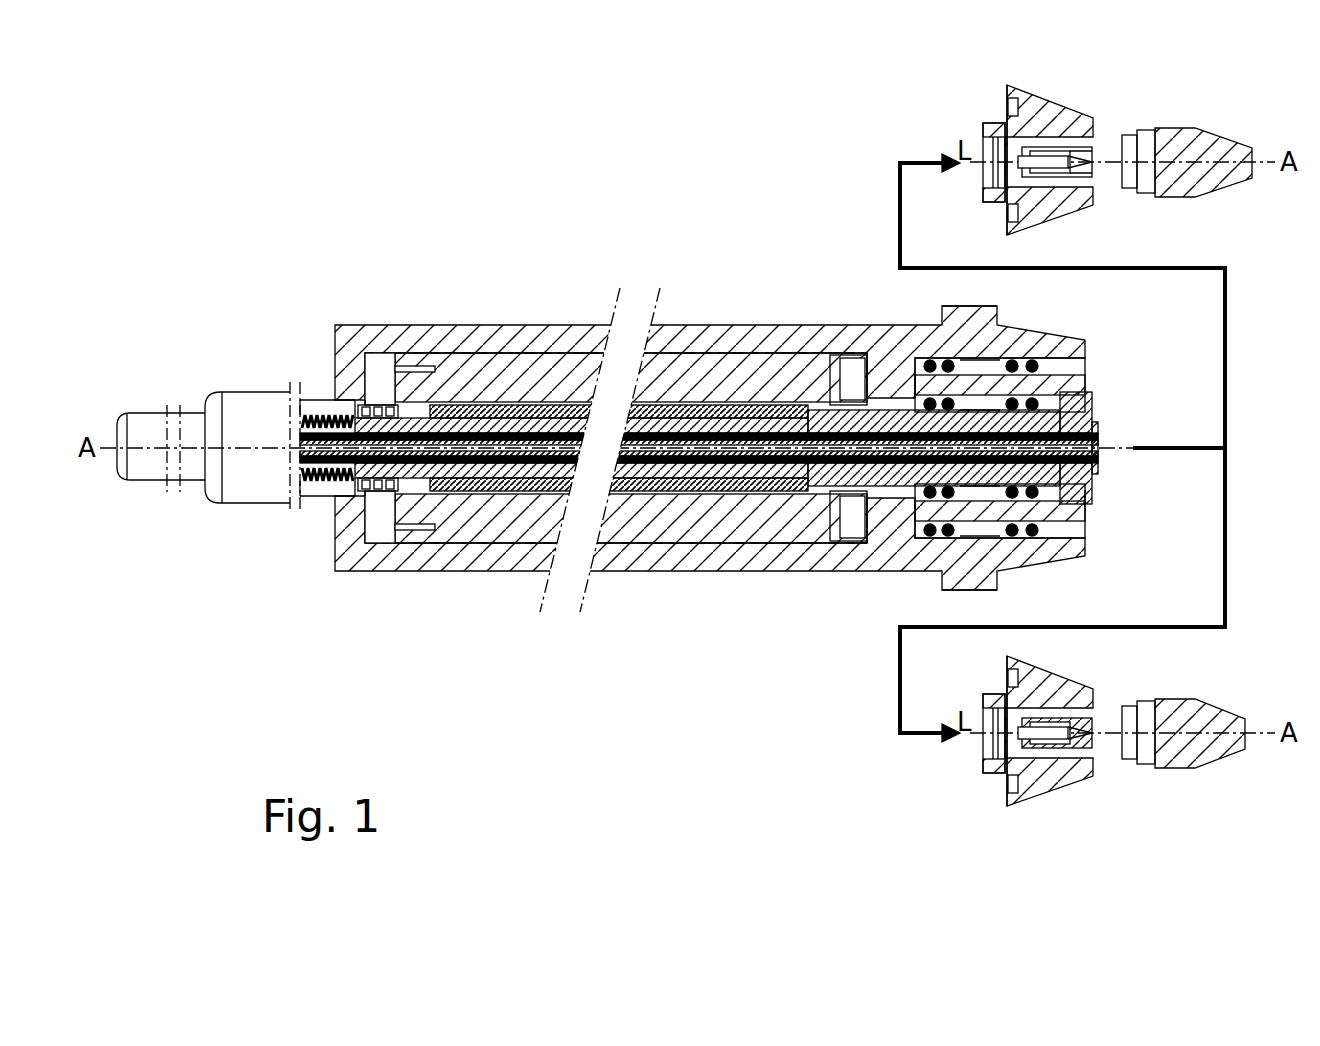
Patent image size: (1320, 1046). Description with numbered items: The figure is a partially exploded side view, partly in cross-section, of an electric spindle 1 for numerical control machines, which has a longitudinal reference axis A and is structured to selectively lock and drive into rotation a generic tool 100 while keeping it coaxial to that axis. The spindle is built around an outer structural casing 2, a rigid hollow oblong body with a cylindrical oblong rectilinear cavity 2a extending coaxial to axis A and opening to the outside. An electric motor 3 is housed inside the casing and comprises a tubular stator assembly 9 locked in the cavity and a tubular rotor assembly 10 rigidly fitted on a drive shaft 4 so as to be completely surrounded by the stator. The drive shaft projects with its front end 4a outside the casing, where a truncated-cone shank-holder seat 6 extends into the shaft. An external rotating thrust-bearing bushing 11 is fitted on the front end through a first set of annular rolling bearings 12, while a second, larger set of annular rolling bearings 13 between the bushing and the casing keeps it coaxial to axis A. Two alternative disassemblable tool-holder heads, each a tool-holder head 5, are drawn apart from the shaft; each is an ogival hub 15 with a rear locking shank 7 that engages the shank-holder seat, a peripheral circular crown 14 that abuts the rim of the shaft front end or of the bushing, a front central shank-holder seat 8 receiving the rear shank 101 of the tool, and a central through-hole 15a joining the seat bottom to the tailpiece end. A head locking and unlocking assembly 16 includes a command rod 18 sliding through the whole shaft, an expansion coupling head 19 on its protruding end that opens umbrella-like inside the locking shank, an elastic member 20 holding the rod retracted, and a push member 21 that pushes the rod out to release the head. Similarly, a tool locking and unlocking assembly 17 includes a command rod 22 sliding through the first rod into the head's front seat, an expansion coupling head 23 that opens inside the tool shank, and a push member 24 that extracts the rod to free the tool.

The electric spindle 1 is at (183, 183).
The outer structural casing 2 is at (568, 325).
The oblong rectilinear cavity 2a is at (576, 362).
The electric motor 3 is at (398, 550).
The drive shaft 4 is at (376, 408).
The front end of the drive shaft 4a is at (1098, 497).
The tool-holder head 5 is at (1050, 95).
The shank-holder seat 6 is at (1082, 480).
The locking shank 7 is at (990, 118).
The central shank-holder seat 8 is at (1093, 150).
The stator assembly 9 is at (455, 378).
The rotor assembly 10 is at (748, 405).
The rotating thrust-bearing bushing 11 is at (1000, 380).
The first set of annular rolling bearings 12 is at (902, 390).
The second set of annular rolling bearings 13 is at (935, 370).
The peripheral circular crown 14 is at (1003, 93).
The ogival hub 15 is at (1062, 205).
The central through-hole 15a is at (1030, 148).
The head locking and unlocking assembly 16 is at (186, 350).
The tool locking and unlocking assembly 17 is at (193, 518).
The command rod 18 is at (342, 410).
The expansion coupling head 19 is at (1100, 428).
The elastic member 20 is at (330, 482).
The push member 21 is at (258, 490).
The command rod 22 is at (333, 416).
The expansion coupling head 23 is at (1092, 175).
The push member 24 is at (133, 430).
The tool 100 is at (1212, 150).
The rear shank 101 is at (1127, 132).